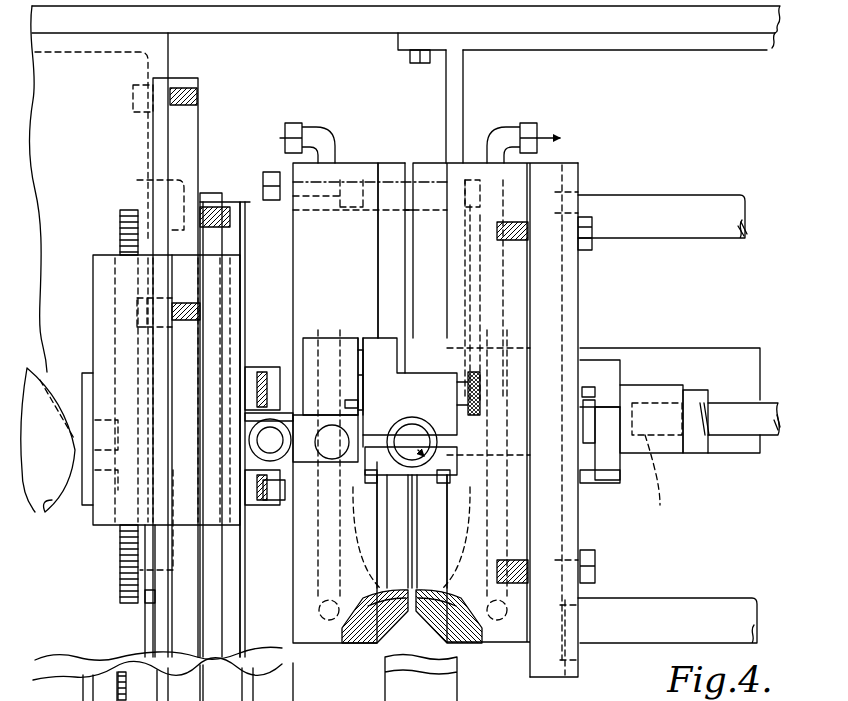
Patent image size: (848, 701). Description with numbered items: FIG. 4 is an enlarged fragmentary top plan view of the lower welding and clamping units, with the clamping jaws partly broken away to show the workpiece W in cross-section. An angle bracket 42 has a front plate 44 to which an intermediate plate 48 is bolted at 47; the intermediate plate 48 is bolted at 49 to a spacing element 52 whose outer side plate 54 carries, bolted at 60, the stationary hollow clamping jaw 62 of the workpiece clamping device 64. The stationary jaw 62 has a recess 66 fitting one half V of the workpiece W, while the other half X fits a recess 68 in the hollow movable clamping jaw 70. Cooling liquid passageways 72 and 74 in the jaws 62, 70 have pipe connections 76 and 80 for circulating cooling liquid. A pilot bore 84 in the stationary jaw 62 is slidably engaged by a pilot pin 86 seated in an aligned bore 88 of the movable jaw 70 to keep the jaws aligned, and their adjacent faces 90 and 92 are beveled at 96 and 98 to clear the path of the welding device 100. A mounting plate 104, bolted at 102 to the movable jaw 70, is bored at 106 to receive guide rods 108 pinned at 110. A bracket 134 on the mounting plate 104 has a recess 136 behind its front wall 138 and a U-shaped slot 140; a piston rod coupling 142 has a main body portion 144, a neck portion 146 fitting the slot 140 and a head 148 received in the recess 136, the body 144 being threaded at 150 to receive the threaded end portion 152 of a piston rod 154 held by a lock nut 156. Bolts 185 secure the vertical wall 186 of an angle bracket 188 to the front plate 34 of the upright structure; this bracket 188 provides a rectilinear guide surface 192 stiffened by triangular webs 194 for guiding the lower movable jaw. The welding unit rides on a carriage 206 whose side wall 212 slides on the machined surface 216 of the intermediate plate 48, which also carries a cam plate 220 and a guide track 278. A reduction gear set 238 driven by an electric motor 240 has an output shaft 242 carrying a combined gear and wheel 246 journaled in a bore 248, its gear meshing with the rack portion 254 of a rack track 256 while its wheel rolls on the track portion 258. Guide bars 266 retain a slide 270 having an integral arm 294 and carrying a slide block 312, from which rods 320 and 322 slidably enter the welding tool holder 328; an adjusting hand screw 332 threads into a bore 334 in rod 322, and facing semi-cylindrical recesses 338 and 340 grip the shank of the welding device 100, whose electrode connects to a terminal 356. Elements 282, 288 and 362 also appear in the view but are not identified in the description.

The vertical front plate 34 is at (292, 34).
The angle bracket 42 is at (170, 60).
The front plate 44 is at (147, 148).
The bolt fastening 47 is at (135, 105).
The intermediate plate 48 is at (196, 100).
The bolt fastening 49 is at (182, 546).
The spacing element 52 is at (224, 194).
The outer side plate 54 is at (288, 585).
The bolt fastening 60 is at (262, 195).
The stationary hollow clamping jaw 62 is at (358, 162).
The workpiece clamping device 64 is at (388, 158).
The recess 66 is at (355, 630).
The recess 68 is at (470, 630).
The hollow movable clamping jaw 70 is at (428, 160).
The cooling liquid passageway 72 is at (362, 325).
The cooling liquid passageway 74 is at (505, 272).
The upper pipe connection 76 is at (308, 126).
The upper pipe connection 80 is at (510, 126).
The pilot bore 84 is at (343, 200).
The pilot pin 86 is at (363, 207).
The aligned bore 88 is at (432, 182).
The face 90 is at (400, 622).
The face 92 is at (422, 622).
The bevel 96 is at (388, 625).
The bevel 98 is at (440, 628).
The welding device 100 is at (448, 475).
The bolt fastening 102 is at (592, 224).
The mounting plate 104 is at (580, 268).
The bore 106 is at (582, 182).
The guide rod 108 is at (680, 196).
The pin fastening 110 is at (575, 160).
The bracket 134 is at (615, 360).
The recess 136 is at (590, 387).
The front wall 138 is at (615, 460).
The U-shaped slot 140 is at (632, 385).
The piston rod coupling 142 is at (672, 455).
The main body portion 144 is at (672, 385).
The neck portion 146 is at (605, 483).
The head 148 is at (583, 422).
The threaded bore 150 is at (662, 481).
The threaded end portion 152 is at (712, 405).
The piston rod 154 is at (770, 402).
The lock nut 156 is at (708, 448).
The bolt 185 is at (410, 58).
The vertical wall 186 is at (620, 55).
The angle bracket 188 is at (678, 52).
The rectilinear guide surface 192 is at (762, 348).
The triangular reinforcing web 194 is at (465, 78).
The carriage 206 is at (90, 262).
The side wall 212 is at (250, 700).
The machined surface 216 is at (199, 135).
The cam plate 220 is at (150, 604).
The reduction gear set 238 is at (82, 390).
The electric driving motor 240 is at (48, 454).
The output shaft 242 is at (130, 425).
The combined gear and wheel 246 is at (118, 370).
The bore 248 is at (106, 420).
The rack portion 254 is at (120, 567).
The rack track 256 is at (120, 546).
The track portion 258 is at (138, 612).
The vertical guide bar 266 is at (278, 368).
The slide 270 is at (298, 700).
The guide track 278 is at (224, 622).
The roller 282 is at (270, 440).
The bar 288 is at (248, 468).
The integral arm 294 is at (286, 487).
The slide block 312 is at (325, 340).
The rod 320 is at (360, 338).
The rod 322 is at (345, 405).
The welding tool holder 328 is at (445, 372).
The adjusting hand screw 332 is at (480, 394).
The threaded bore 334 is at (440, 484).
The semi-cylindrical recess 338 is at (400, 422).
The semi-cylindrical recess 340 is at (372, 484).
The terminal 356 is at (406, 484).
The roller 362 is at (325, 438).
The stamping V is at (395, 592).
The workpiece W is at (411, 585).
The stamping X is at (434, 592).